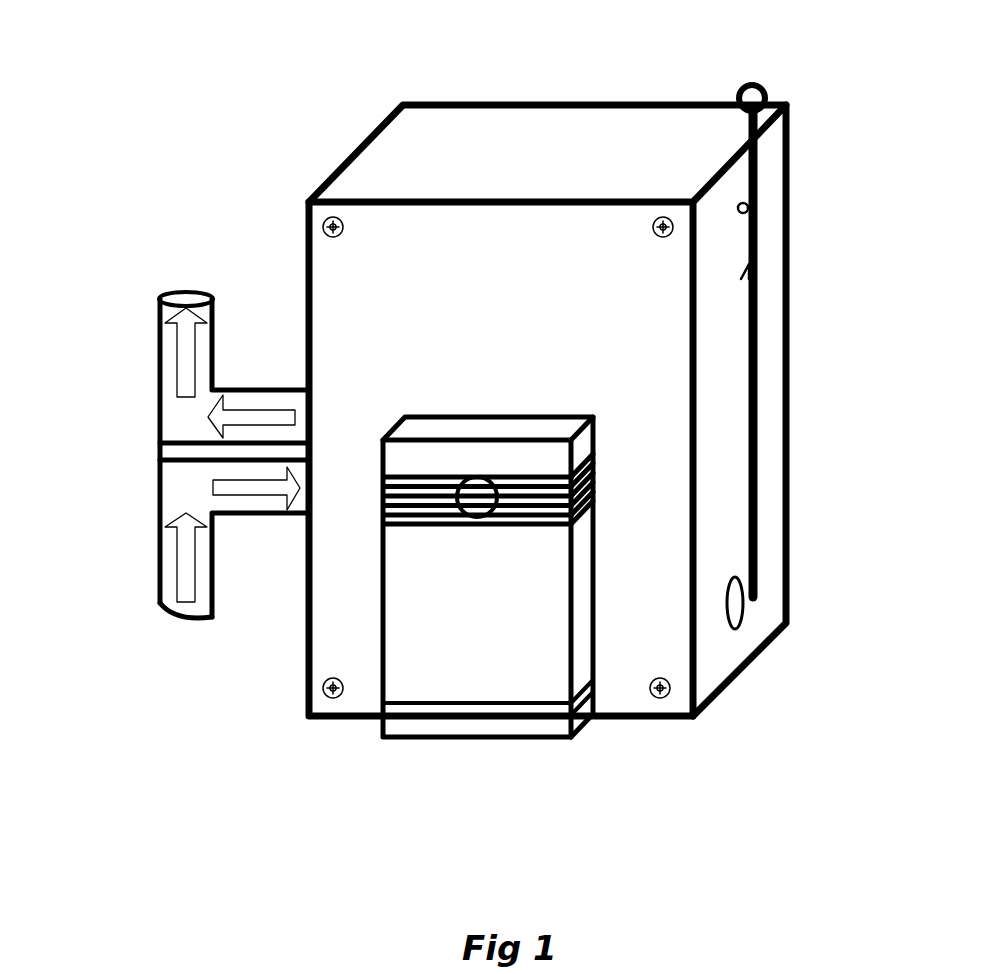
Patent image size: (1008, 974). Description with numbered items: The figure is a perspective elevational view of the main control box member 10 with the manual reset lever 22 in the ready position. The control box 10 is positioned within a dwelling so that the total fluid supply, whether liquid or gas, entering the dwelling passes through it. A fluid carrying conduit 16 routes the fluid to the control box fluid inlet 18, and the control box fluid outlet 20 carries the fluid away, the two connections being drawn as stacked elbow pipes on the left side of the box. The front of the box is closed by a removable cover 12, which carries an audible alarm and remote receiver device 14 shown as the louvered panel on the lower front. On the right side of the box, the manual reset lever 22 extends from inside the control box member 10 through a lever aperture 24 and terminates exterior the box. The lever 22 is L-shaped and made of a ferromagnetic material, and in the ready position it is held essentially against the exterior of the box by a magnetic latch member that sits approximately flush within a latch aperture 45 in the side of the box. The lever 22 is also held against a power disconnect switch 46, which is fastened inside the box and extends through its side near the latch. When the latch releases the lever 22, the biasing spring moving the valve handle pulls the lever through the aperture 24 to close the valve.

The main control box member 10 is at (557, 143).
The removable cover 12 is at (340, 283).
The audible alarm and remote receiver device 14 is at (470, 732).
The fluid carrying conduit 16 is at (168, 480).
The control box fluid inlet 18 is at (245, 507).
The control box fluid outlet 20 is at (268, 402).
The manual reset lever 22 is at (757, 340).
The lever aperture 24 is at (735, 600).
The latch aperture 45 is at (752, 192).
The power disconnect switch 46 is at (755, 262).